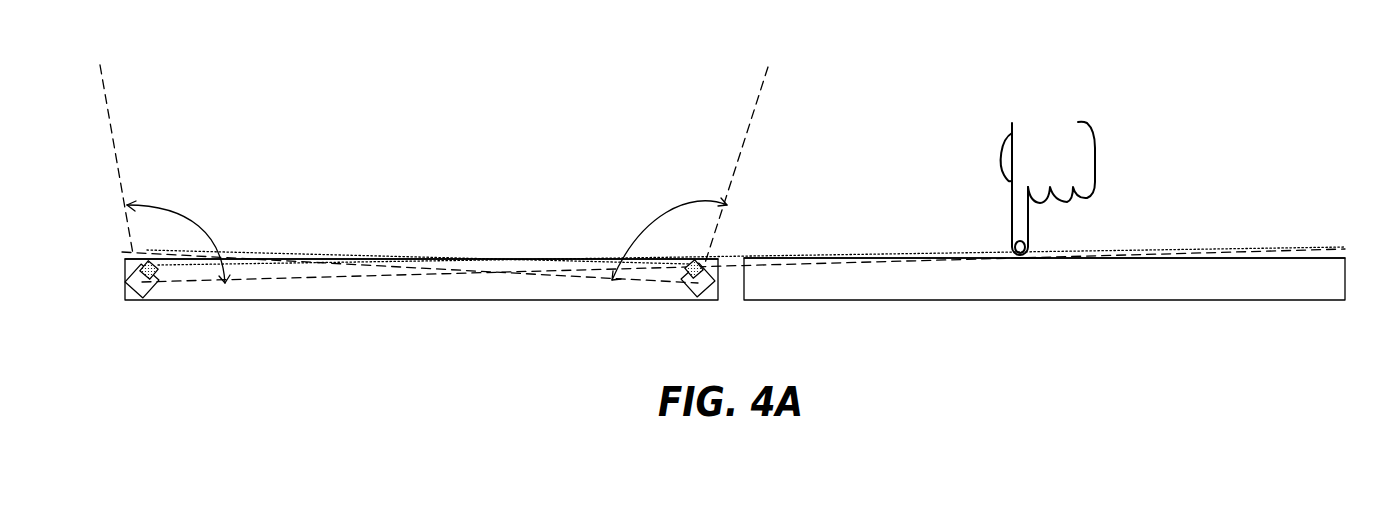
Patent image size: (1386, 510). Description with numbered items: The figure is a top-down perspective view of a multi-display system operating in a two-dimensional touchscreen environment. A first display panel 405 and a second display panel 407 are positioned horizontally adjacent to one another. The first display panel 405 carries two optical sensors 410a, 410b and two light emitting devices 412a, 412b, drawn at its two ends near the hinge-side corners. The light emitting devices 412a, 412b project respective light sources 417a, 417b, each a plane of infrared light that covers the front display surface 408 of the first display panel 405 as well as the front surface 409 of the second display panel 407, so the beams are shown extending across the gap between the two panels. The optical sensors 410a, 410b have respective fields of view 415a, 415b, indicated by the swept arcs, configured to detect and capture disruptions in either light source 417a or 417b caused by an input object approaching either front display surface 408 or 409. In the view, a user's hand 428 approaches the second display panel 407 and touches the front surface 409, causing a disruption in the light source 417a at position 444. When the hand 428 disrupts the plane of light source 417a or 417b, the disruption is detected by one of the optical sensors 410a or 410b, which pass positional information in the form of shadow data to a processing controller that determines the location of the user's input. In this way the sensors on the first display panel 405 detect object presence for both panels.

The first display panel 405 is at (430, 300).
The second display panel 407 is at (973, 301).
The front display surface 408 is at (475, 259).
The front surface 409 is at (1093, 256).
The optical sensor 410a is at (148, 298).
The optical sensor 410b is at (692, 295).
The light emitting device 412a is at (156, 283).
The light emitting device 412b is at (684, 281).
The field of view 415a is at (191, 214).
The field of view 415b is at (657, 210).
The light source 417a is at (280, 265).
The light source 417b is at (285, 252).
The user's hand 428 is at (1010, 156).
The position 444 is at (1032, 255).